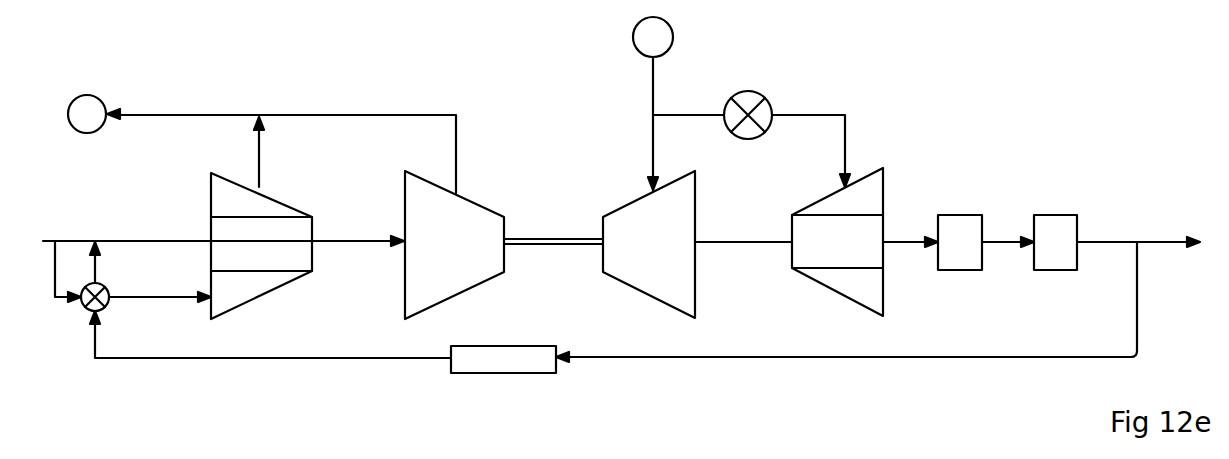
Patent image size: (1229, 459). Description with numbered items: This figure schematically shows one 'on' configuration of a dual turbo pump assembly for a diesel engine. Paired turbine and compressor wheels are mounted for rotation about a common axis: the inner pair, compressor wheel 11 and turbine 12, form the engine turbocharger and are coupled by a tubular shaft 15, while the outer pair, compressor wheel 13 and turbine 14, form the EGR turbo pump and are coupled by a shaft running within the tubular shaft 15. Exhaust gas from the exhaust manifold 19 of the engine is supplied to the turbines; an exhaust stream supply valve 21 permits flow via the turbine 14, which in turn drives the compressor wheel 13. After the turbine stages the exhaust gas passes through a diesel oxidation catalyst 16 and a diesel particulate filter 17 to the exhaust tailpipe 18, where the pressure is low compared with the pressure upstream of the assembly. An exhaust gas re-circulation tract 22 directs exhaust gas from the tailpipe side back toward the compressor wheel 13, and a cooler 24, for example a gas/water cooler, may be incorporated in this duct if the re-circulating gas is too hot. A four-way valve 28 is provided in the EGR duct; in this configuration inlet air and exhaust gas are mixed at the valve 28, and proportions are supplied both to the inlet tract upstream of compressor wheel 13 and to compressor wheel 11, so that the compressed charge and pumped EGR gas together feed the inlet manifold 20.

The compressor wheel 11 is at (488, 213).
The turbine 12 is at (624, 208).
The compressor wheel 13 is at (293, 212).
The turbine 14 is at (877, 170).
The tubular shaft 15 is at (563, 237).
The diesel oxidation catalyst 16 is at (974, 214).
The diesel particulate filter 17 is at (1066, 214).
The exhaust tailpipe 18 is at (1167, 241).
The exhaust manifold 19 is at (653, 103).
The inlet manifold 20 is at (262, 144).
The exhaust stream supply valve 21 is at (768, 98).
The exhaust gas re-circulation tract 22 is at (904, 360).
The cooler 24 is at (500, 370).
The 4-way valve 28 is at (83, 308).